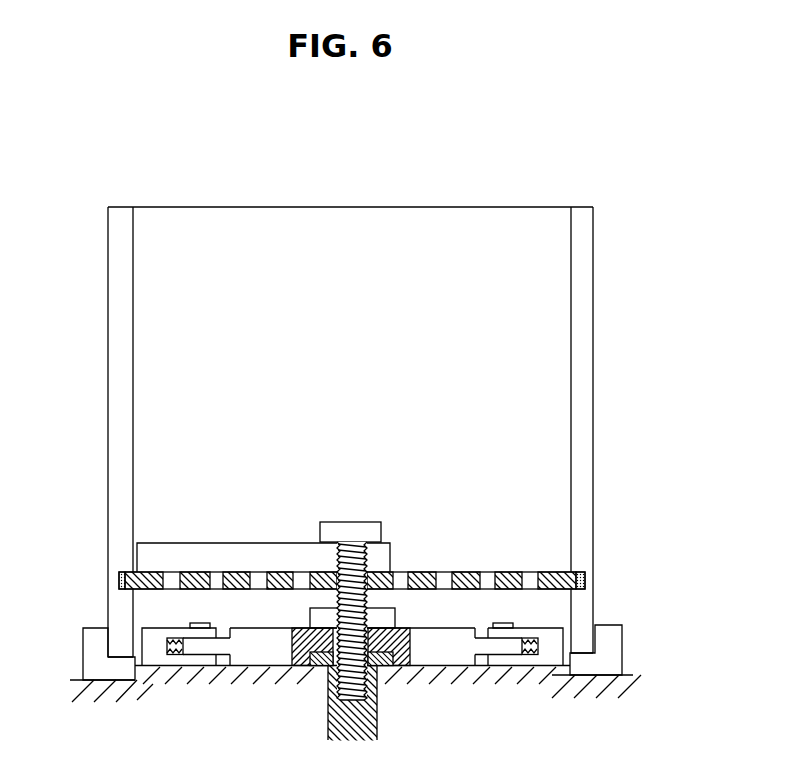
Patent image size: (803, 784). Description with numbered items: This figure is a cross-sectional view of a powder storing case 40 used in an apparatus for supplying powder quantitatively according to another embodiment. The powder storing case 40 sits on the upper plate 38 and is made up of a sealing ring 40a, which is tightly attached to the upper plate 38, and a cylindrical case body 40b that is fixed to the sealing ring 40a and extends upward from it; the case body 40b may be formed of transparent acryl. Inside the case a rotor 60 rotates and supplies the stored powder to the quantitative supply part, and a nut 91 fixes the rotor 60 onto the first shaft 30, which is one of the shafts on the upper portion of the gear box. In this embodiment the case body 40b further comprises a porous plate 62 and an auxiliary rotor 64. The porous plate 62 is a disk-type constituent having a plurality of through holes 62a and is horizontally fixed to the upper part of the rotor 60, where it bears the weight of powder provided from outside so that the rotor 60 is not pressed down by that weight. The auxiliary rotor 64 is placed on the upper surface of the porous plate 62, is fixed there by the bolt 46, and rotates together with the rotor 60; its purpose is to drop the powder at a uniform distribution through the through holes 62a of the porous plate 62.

The first shaft 30 is at (366, 732).
The upper plate 38 is at (77, 685).
The powder storing case 40 is at (518, 178).
The sealing ring 40a is at (610, 642).
The case body 40b is at (583, 347).
The bolt 46 is at (344, 548).
The rotor 60 is at (436, 664).
The porous plate 62 is at (530, 560).
The through holes 62a is at (447, 580).
The auxiliary rotor 64 is at (205, 550).
The nut 91 is at (320, 617).